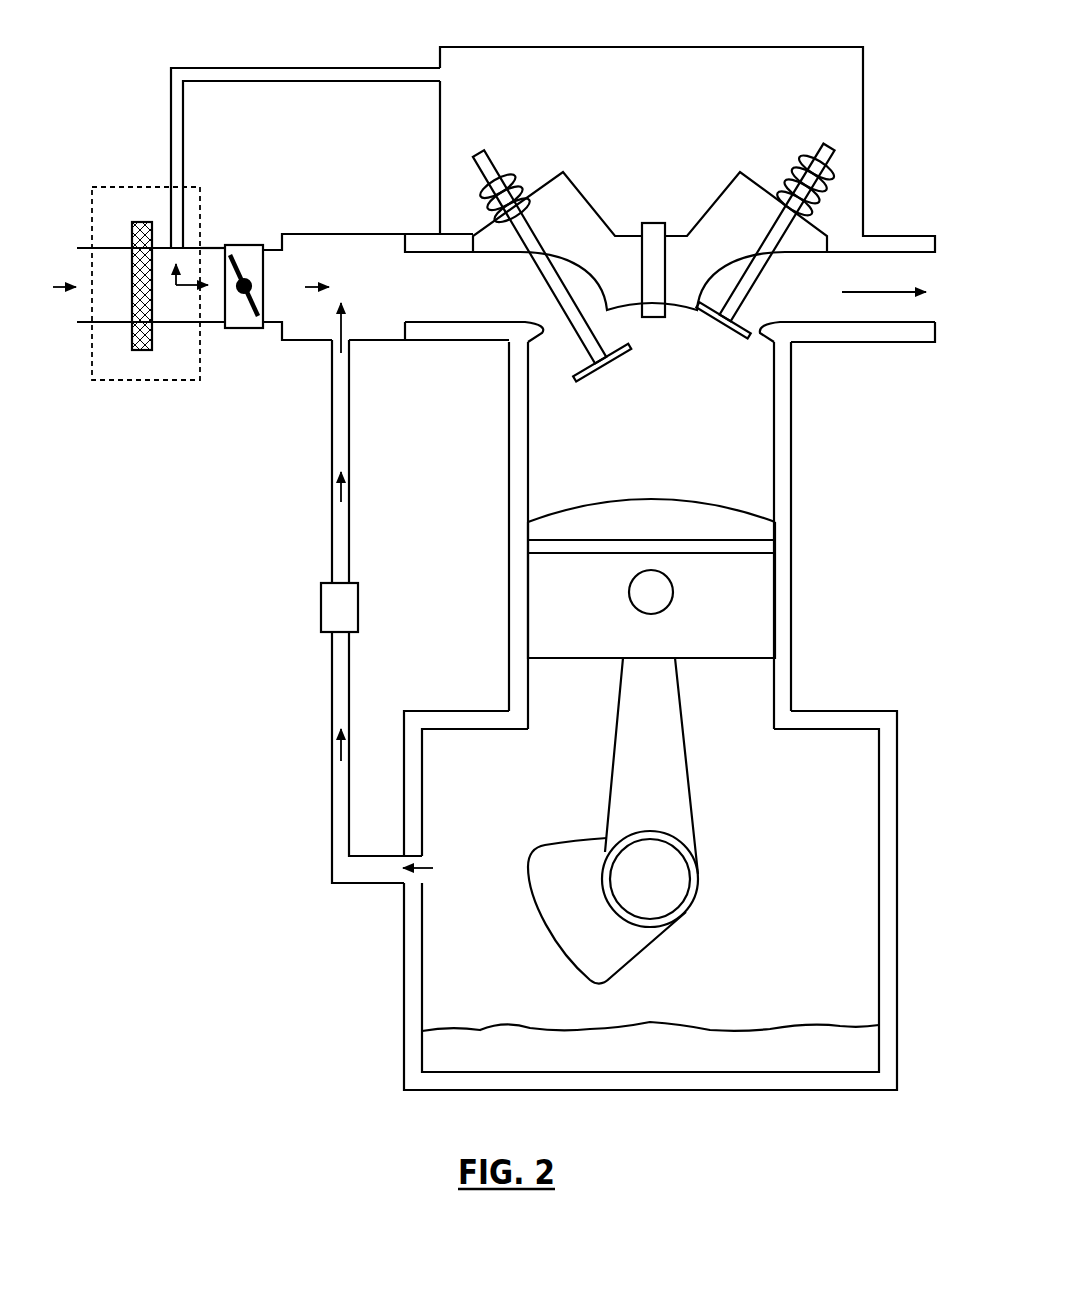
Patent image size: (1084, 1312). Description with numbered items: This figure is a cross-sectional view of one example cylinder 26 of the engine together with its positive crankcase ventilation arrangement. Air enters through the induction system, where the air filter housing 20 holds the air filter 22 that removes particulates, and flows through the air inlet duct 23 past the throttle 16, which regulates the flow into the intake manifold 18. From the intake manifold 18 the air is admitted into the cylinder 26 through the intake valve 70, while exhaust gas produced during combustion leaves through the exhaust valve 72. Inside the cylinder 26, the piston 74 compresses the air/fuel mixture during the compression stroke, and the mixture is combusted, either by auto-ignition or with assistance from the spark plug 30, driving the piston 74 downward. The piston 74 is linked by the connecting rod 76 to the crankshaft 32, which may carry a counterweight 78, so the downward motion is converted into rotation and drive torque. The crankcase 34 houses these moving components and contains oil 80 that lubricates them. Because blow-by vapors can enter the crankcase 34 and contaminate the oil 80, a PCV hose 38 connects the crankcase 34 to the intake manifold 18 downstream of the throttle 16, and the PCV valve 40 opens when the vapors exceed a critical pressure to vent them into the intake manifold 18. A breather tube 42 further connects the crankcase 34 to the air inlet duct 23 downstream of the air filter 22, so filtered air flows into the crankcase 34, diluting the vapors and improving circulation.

The throttle 16 is at (245, 328).
The intake manifold 18 is at (347, 234).
The air filter housing 20 is at (120, 187).
The air filter 22 is at (142, 350).
The air inlet duct 23 is at (218, 248).
The cylinder 26 is at (842, 513).
The spark plug 30 is at (657, 223).
The crankshaft 32 is at (700, 897).
The crankcase 34 is at (882, 827).
The PCV hose 38 is at (330, 822).
The PCV valve 40 is at (321, 608).
The breather tube 42 is at (295, 68).
The intake valve 70 is at (607, 366).
The exhaust valve 72 is at (729, 322).
The piston 74 is at (712, 660).
The connecting rod 76 is at (612, 775).
The counterweight 78 is at (545, 938).
The oil 80 is at (745, 1028).